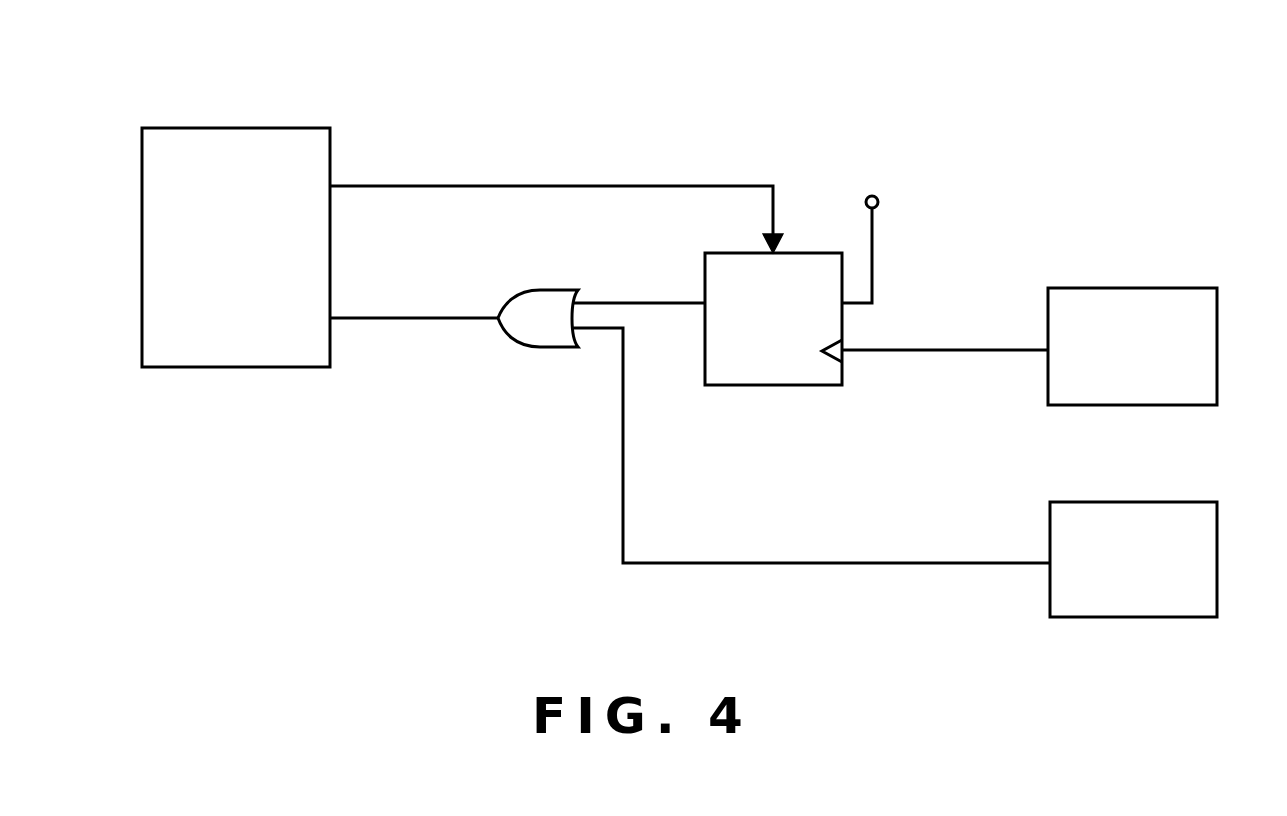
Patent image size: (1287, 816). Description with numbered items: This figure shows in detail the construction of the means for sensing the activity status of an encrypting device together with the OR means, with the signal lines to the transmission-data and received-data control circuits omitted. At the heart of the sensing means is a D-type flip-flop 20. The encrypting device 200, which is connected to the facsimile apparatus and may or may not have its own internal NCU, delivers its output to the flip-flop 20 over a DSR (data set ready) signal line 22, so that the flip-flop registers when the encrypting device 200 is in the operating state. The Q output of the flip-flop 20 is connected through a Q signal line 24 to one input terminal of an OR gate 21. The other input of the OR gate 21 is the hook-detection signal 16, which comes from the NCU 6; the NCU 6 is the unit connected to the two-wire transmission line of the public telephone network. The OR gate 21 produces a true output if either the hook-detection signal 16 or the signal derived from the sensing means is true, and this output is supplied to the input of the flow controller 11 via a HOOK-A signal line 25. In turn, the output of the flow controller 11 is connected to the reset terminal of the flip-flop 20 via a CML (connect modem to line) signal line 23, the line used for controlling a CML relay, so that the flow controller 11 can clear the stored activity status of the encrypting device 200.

The flow controller 11 is at (290, 128).
The CML signal line 23 is at (435, 186).
The Q signal line 24 is at (603, 303).
The HOOK-A signal line 25 is at (447, 318).
The OR gate 21 is at (543, 347).
The D-type flip-flop 20 is at (823, 385).
The DSR signal line 22 is at (1008, 350).
The encrypting device 200 is at (1182, 288).
The NCU 6 is at (1182, 502).
The hook-detection signal 16 is at (1012, 563).